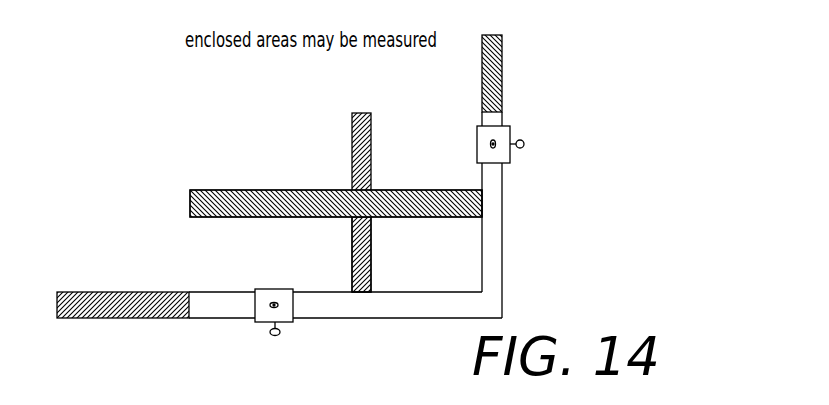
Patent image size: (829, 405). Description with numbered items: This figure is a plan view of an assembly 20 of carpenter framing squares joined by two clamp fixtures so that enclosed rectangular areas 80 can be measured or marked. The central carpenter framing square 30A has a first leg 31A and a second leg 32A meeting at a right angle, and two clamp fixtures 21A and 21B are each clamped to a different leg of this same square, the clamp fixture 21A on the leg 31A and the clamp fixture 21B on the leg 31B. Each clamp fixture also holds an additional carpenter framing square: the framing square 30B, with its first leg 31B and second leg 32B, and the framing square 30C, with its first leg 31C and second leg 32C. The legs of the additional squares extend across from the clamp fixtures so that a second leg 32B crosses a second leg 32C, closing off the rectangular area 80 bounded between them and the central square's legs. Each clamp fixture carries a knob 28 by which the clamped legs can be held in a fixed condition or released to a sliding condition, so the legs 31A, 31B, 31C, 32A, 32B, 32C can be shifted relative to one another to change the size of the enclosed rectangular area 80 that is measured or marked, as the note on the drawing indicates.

The measurement apparatus / frame assembly 20 is at (156, 224).
The clamp fixture 21A is at (265, 289).
The clamp fixture 21B is at (510, 133).
The locking knob 28 is at (270, 336).
The carpenter framing square 30A is at (502, 267).
The carpenter framing square 30B is at (276, 188).
The carpenter framing square 30C is at (350, 135).
The first leg 31A is at (433, 320).
The first leg 31B is at (502, 67).
The first leg 31C is at (147, 318).
The second leg 32A is at (500, 213).
The second leg 32B is at (455, 190).
The second leg 32C is at (351, 277).
The enclosed rectangular area 80 is at (371, 63).